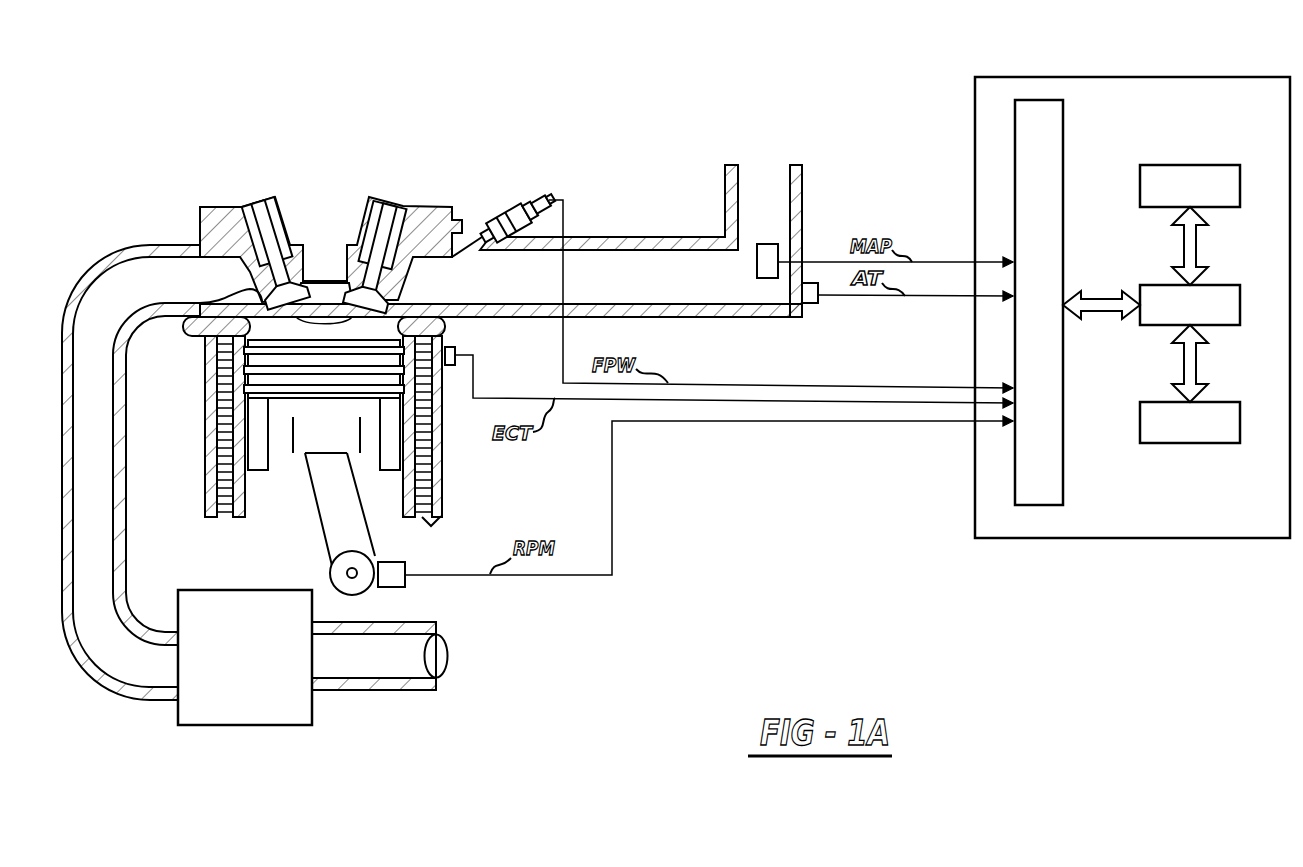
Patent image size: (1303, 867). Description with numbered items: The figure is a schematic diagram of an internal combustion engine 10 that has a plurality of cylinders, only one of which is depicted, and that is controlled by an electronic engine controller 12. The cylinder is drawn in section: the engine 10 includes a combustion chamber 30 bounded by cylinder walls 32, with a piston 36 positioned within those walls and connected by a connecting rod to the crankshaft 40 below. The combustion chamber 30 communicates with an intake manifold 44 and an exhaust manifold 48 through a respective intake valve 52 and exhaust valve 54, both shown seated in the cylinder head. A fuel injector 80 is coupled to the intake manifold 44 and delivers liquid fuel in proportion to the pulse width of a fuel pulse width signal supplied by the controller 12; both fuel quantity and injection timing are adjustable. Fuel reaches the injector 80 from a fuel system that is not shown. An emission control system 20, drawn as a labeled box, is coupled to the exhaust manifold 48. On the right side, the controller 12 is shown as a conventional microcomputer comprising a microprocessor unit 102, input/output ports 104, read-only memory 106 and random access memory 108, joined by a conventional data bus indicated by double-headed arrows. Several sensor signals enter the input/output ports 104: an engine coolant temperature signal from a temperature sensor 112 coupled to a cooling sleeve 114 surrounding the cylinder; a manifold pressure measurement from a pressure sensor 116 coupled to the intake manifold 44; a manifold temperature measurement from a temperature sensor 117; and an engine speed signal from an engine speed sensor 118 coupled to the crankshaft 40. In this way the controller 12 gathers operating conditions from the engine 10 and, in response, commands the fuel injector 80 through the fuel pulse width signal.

The internal combustion engine 10 is at (191, 137).
The electronic engine controller 12 is at (1161, 121).
The emission control system 20 is at (267, 727).
The combustion chamber 30 is at (305, 328).
The cylinder walls 32 is at (245, 513).
The piston 36 is at (303, 447).
The crankshaft 40 is at (356, 596).
The intake manifold 44 is at (634, 290).
The exhaust manifold 48 is at (113, 300).
The intake valve 52 is at (397, 297).
The exhaust valve 54 is at (262, 298).
The fuel injector 80 is at (512, 207).
The microprocessor unit 102 is at (1218, 285).
The input/output ports 104 is at (975, 120).
The read-only memory 106 is at (1190, 165).
The random access memory 108 is at (1182, 443).
The temperature sensor 112 is at (455, 345).
The cooling sleeve 114 is at (443, 518).
The pressure sensor 116 is at (762, 278).
The temperature sensor 117 is at (810, 305).
The engine speed sensor 118 is at (399, 561).